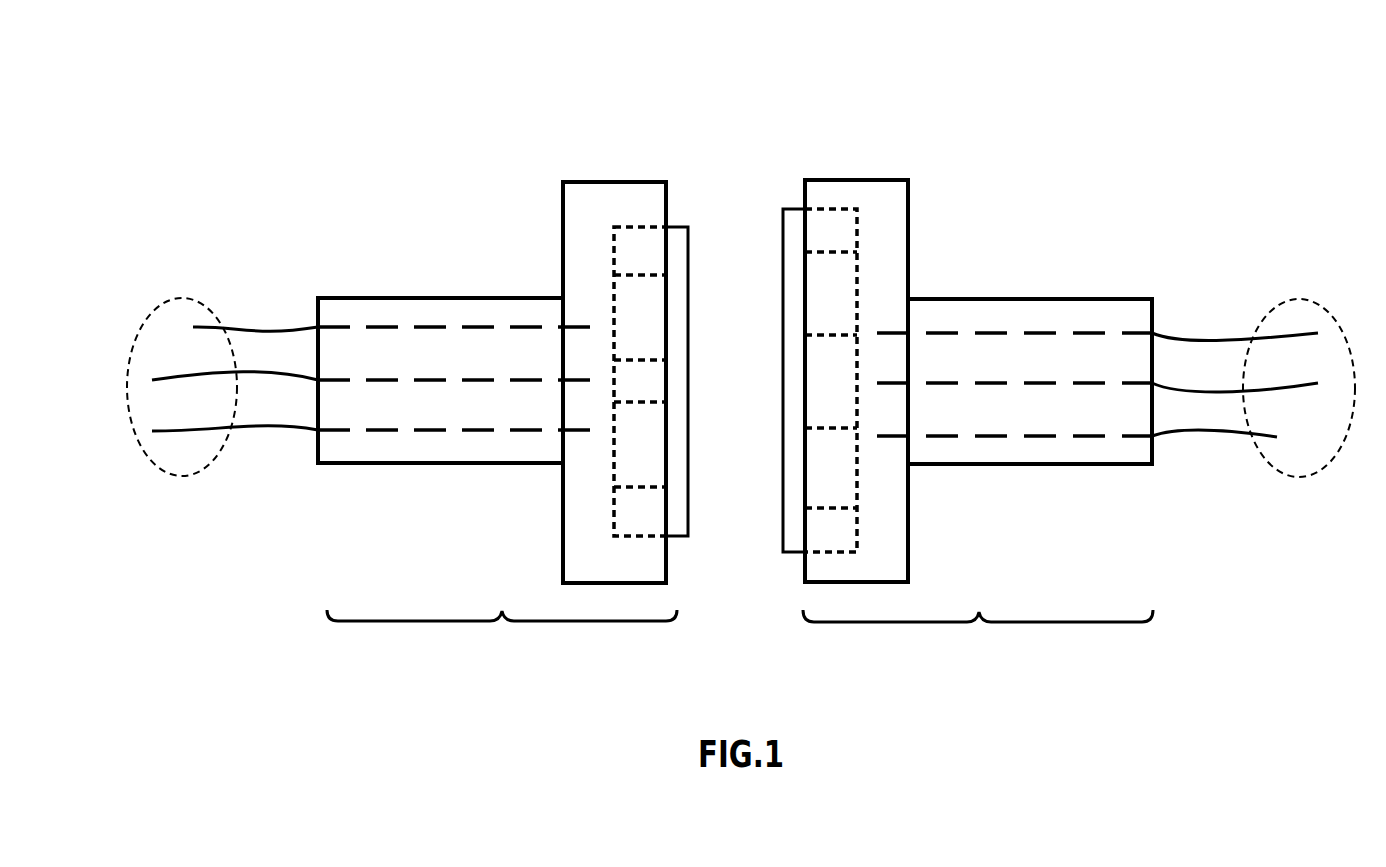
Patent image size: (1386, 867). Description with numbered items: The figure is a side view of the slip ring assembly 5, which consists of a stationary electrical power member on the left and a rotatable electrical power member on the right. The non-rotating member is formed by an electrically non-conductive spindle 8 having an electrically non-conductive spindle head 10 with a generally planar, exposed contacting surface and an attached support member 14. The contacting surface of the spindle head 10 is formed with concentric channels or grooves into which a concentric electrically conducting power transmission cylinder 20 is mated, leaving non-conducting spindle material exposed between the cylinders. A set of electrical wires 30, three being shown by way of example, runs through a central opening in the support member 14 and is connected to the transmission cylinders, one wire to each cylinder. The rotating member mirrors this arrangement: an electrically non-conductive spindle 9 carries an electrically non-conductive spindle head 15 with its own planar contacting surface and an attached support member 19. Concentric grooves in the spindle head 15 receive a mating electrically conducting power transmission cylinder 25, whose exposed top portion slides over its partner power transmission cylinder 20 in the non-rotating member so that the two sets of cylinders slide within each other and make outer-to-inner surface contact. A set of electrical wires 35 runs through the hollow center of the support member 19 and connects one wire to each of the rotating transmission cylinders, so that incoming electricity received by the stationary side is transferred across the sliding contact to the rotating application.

The slip ring assembly 5 is at (995, 183).
The electrically non-conductive spindle 8 is at (500, 623).
The electrically non-conductive spindle 9 is at (977, 624).
The electrically non-conductive spindle head 10 is at (562, 207).
The support member 14 is at (400, 298).
The electrically non-conductive spindle head 15 is at (909, 537).
The support member 19 is at (1045, 464).
The electrically conducting power transmission cylinder 20 is at (676, 227).
The electrically conducting power transmission cylinder 25 is at (793, 552).
The electrical wires 30 is at (173, 298).
The electrical wires 35 is at (1297, 299).